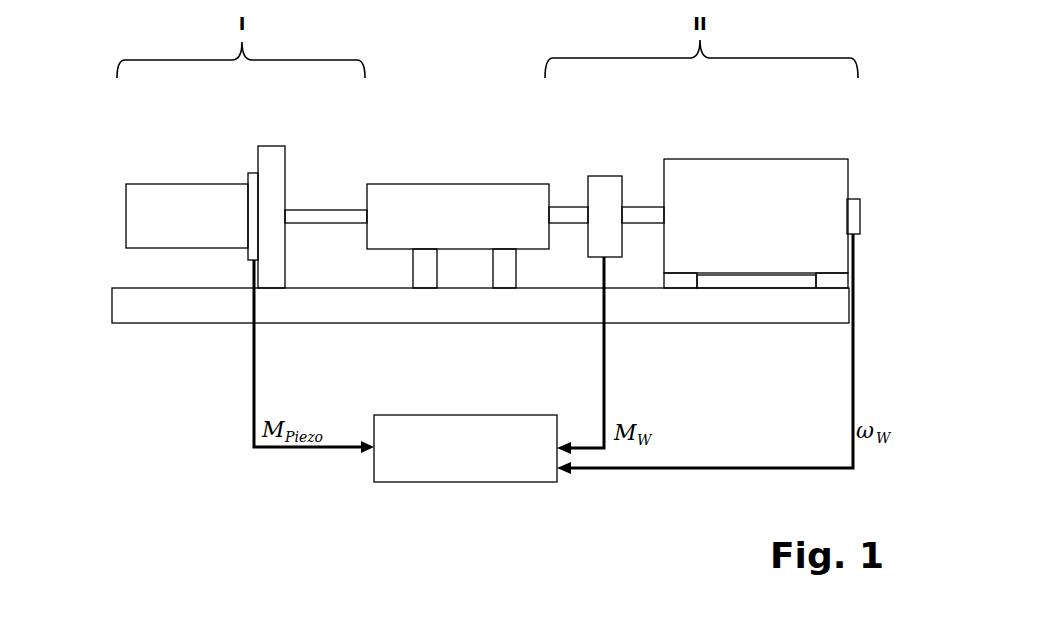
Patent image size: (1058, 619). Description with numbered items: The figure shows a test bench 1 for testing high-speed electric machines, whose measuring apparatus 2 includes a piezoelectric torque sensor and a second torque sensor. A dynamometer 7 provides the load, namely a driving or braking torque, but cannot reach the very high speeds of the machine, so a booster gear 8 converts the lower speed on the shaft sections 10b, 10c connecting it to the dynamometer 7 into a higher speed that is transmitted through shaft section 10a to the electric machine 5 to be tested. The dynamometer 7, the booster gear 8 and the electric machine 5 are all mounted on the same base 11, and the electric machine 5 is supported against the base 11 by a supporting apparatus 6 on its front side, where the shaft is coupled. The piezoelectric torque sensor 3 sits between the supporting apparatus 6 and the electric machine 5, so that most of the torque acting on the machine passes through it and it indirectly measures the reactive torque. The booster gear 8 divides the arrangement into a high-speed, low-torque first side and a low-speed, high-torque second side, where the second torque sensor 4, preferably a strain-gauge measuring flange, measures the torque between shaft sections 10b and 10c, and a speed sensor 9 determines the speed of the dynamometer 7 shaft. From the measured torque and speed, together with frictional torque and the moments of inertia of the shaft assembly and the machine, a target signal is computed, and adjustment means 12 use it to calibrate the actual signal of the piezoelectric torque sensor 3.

The test bench 1 is at (126, 160).
The measuring apparatus 2 is at (360, 484).
The piezoelectric torque sensor 3 is at (254, 262).
The second torque sensor 4 is at (610, 175).
The electric machine to be tested 5 is at (187, 201).
The supporting apparatus 6 is at (276, 146).
The dynamometer 7 is at (756, 223).
The booster gear 8 is at (458, 220).
The speed sensor 9 is at (860, 217).
The shaft section 10a is at (354, 226).
The shaft section 10b is at (571, 227).
The shaft section 10c is at (655, 227).
The base 11 is at (480, 305).
The adjustment means 12 is at (465, 448).